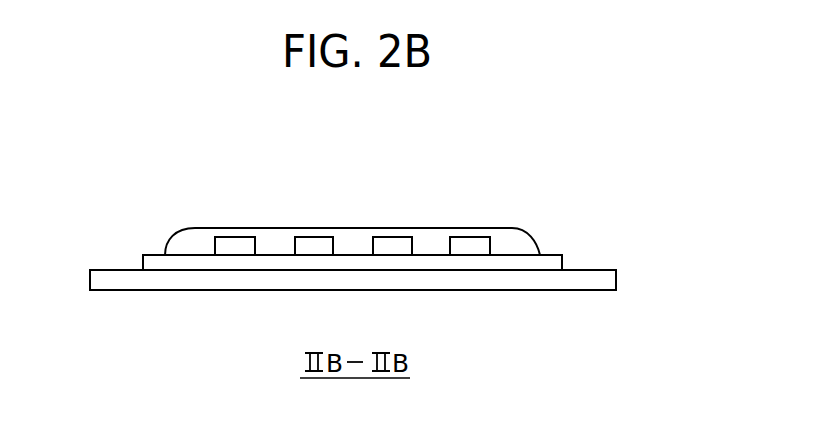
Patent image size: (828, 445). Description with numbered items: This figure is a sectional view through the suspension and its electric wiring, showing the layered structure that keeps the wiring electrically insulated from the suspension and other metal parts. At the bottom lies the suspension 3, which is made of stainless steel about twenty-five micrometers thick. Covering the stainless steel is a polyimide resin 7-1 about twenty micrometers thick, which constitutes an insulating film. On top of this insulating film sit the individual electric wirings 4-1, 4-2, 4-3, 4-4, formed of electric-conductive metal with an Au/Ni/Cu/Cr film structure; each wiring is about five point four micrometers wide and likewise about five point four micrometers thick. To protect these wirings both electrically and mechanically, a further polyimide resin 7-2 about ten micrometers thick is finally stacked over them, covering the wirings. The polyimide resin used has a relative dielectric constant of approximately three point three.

The suspension 3 is at (152, 283).
The polyimide resin 7-1 is at (158, 260).
The polyimide resin 7-2 is at (537, 252).
The electric wiring 4-1 is at (228, 247).
The electric wiring 4-2 is at (312, 247).
The electric wiring 4-3 is at (387, 247).
The electric wiring 4-4 is at (465, 247).